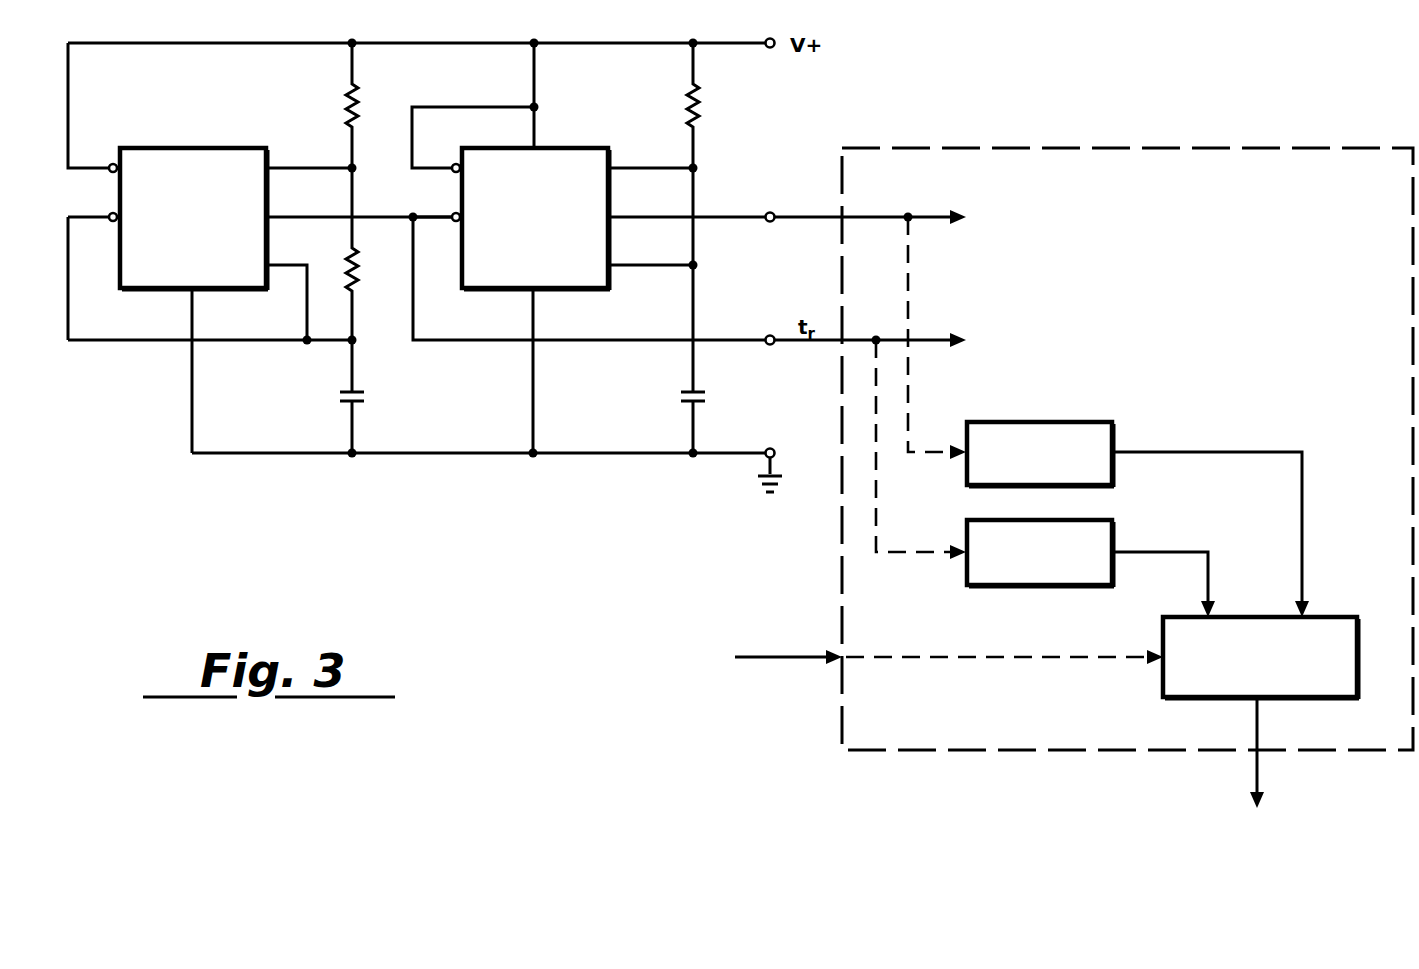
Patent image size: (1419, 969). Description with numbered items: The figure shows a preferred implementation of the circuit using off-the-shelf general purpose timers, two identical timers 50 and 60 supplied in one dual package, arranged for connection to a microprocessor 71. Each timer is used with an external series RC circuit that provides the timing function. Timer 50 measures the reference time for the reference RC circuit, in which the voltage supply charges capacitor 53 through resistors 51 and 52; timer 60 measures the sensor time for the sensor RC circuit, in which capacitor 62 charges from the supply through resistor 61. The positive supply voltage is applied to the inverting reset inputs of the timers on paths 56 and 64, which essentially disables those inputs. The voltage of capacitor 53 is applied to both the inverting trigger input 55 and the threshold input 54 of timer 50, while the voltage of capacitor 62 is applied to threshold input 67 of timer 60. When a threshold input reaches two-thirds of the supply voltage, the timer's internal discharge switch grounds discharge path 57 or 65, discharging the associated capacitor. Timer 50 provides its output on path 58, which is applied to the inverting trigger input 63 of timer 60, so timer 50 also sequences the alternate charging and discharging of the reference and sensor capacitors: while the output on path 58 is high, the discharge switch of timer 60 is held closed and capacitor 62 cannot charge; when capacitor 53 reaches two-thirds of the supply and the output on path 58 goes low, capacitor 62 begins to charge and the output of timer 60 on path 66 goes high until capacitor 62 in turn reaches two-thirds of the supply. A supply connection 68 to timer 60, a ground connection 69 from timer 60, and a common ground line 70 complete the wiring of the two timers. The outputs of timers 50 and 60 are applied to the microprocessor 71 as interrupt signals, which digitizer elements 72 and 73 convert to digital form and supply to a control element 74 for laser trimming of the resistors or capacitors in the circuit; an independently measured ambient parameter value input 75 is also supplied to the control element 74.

The timer 50 is at (173, 148).
The resistor 51 is at (350, 92).
The resistor 52 is at (356, 294).
The capacitor 53 is at (340, 400).
The threshold input 54 is at (290, 264).
The inverting trigger input 55 is at (95, 216).
The path 56 is at (90, 167).
The discharge path 57 is at (290, 167).
The output path 58 is at (290, 216).
The timer 60 is at (567, 148).
The resistor 61 is at (692, 92).
The capacitor 62 is at (682, 400).
The inverting trigger input 63 is at (435, 216).
The path 64 is at (433, 167).
The discharge path 65 is at (630, 167).
The output path 66 is at (630, 216).
The threshold input 67 is at (630, 264).
The supply connection of second timer 68 is at (536, 123).
The ground connection of second timer 69 is at (531, 320).
The ground line 70 is at (457, 458).
The microprocessor 71 is at (1172, 148).
The digitizer element 72 is at (1090, 422).
The digitizer element 73 is at (1090, 520).
The control element 74 is at (1260, 617).
The ambient parameter value input 75 is at (768, 655).